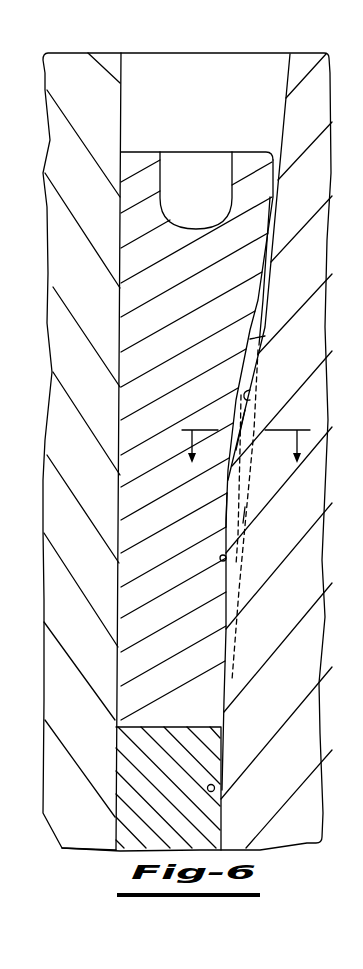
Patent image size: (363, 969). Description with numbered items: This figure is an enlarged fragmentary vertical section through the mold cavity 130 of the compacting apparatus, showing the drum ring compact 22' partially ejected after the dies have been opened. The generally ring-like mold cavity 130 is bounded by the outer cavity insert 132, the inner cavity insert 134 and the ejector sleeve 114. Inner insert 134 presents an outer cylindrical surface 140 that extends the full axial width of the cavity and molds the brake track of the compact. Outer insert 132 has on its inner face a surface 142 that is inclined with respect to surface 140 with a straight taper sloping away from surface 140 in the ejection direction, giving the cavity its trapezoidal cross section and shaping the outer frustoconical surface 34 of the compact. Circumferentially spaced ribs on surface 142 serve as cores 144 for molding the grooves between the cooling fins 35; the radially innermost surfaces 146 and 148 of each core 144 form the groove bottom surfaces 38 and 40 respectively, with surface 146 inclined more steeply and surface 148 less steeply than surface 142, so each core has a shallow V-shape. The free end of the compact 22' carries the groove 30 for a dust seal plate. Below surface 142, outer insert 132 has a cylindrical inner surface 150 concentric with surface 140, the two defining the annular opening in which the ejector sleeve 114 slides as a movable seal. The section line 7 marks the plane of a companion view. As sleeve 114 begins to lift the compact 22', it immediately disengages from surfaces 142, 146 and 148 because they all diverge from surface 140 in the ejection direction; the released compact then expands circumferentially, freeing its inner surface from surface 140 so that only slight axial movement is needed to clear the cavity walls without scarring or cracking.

The mold cavity 130 is at (207, 49).
The inner cavity insert 134 is at (84, 51).
The outer cavity insert 132 is at (318, 51).
The outer cylindrical surface 140 is at (128, 112).
The inclined surface 142 is at (250, 94).
The drum ring compact 22' is at (197, 449).
The groove 30 is at (237, 168).
The outer frustoconical surface 34 is at (268, 199).
The groove bottom surface 38 is at (265, 336).
The radially innermost core surface 146 is at (248, 395).
The cooling fin 35 is at (238, 421).
The section line 7- 7 is at (248, 451).
The core 144 is at (227, 493).
The groove bottom surface 40 is at (233, 515).
The radially innermost core surface 148 is at (226, 560).
The cylindrical inner surface 150 is at (215, 789).
The ejector sleeve 114 is at (114, 852).